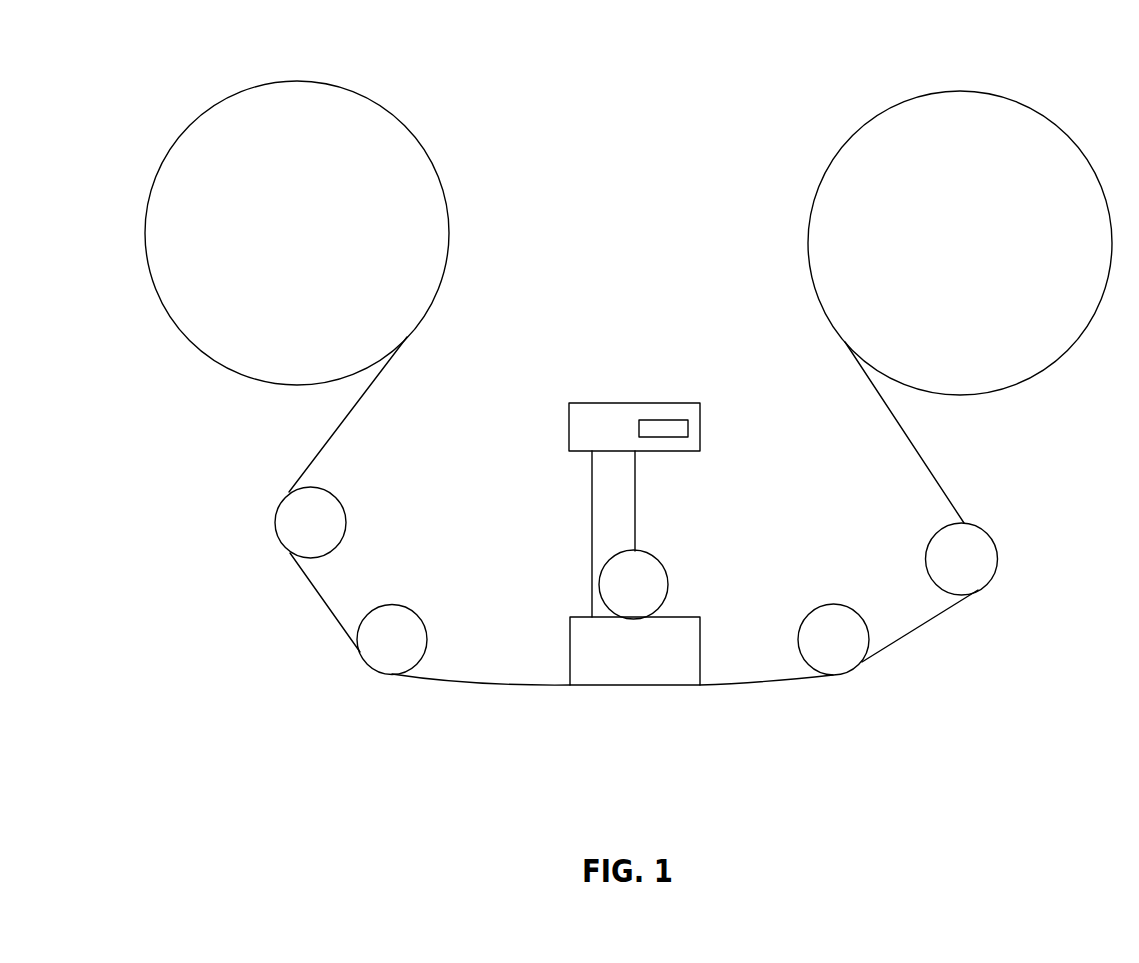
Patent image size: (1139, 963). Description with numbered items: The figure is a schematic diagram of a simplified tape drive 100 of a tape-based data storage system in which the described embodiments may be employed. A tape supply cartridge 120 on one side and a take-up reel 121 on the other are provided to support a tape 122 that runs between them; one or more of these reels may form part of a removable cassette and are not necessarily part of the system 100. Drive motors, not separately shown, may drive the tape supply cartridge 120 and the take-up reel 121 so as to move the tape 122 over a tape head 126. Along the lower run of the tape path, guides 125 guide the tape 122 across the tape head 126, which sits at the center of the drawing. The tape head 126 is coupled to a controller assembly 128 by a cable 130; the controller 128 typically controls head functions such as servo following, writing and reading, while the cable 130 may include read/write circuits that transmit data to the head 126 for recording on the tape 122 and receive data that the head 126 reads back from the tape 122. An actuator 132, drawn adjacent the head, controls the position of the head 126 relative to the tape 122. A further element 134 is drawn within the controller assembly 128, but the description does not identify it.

The tape drive 100 is at (265, 453).
The tape supply cartridge 120 is at (450, 197).
The take-up reel 121 is at (1058, 363).
The tape 122 is at (483, 683).
The guides 125 is at (388, 605).
The tape head 126 is at (701, 650).
The controller assembly 128 is at (633, 403).
The cable 130 is at (592, 582).
The actuator 132 is at (663, 555).
The sensor 134 is at (675, 420).